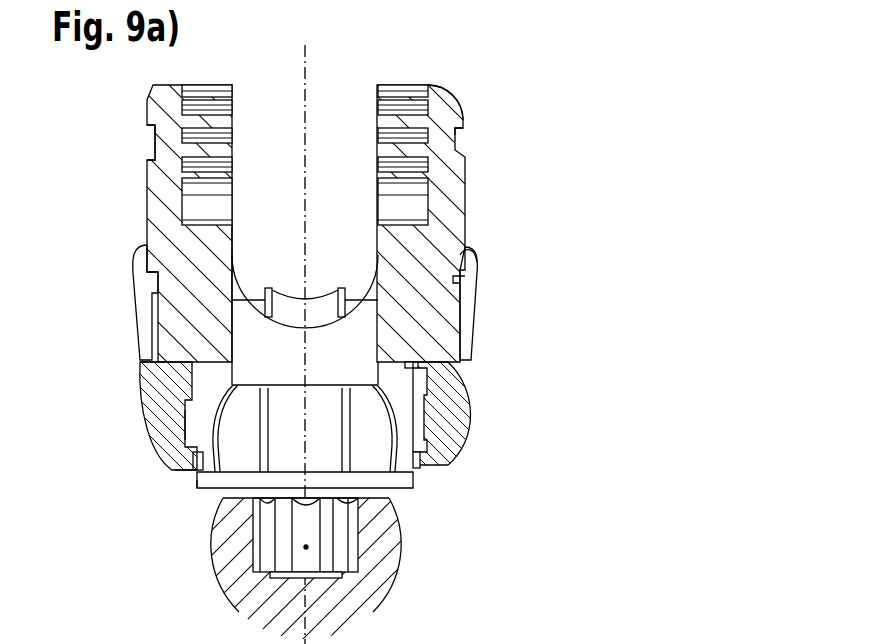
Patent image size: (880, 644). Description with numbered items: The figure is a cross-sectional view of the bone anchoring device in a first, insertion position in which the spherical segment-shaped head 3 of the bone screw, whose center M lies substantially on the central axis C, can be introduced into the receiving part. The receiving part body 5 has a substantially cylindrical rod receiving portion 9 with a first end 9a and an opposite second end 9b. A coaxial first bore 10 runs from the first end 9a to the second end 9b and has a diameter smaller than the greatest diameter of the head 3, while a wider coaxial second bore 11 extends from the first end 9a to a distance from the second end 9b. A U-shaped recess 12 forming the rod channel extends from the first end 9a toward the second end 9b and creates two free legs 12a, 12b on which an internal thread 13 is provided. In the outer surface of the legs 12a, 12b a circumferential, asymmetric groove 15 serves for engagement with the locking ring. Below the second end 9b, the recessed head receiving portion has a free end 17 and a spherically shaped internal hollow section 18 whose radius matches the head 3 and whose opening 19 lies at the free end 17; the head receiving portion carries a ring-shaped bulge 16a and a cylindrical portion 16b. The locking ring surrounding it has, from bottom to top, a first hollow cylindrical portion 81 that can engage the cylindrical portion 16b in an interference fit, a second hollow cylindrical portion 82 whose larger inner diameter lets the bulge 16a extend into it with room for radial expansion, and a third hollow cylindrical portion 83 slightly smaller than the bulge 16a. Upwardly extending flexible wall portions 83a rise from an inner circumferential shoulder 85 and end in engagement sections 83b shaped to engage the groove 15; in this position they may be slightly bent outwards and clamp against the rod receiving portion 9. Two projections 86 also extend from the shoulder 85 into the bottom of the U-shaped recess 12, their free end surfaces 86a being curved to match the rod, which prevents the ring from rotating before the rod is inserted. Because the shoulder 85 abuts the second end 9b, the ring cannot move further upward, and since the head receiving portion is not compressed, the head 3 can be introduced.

The central axis C is at (305, 60).
The head 3 is at (476, 322).
The receiving part body 5 is at (440, 322).
The rod receiving portion 9 is at (160, 148).
The first end 9a is at (432, 82).
The second end 9b is at (450, 365).
The first bore 10 is at (240, 340).
The second bore 11 is at (184, 206).
The U-shaped recess 12 is at (234, 228).
The free leg 12a is at (148, 125).
The free leg 12b is at (456, 110).
The internal thread 13 is at (203, 112).
The groove 15 is at (472, 278).
The ring-shaped bulge 16a is at (415, 420).
The cylindrical portion 16b is at (195, 485).
The free end 17 is at (418, 488).
The internal hollow section 18 is at (205, 488).
The opening 19 is at (403, 498).
The first hollow cylindrical portion 81 is at (172, 462).
The second hollow cylindrical portion 82 is at (172, 415).
The third hollow cylindrical portion 83 is at (185, 380).
The flexible wall portion 83a is at (468, 296).
The engagement section 83b is at (470, 258).
The shoulder 85 is at (156, 372).
The projection 86 is at (296, 297).
The free end surface 86a is at (323, 295).
The center M is at (306, 547).